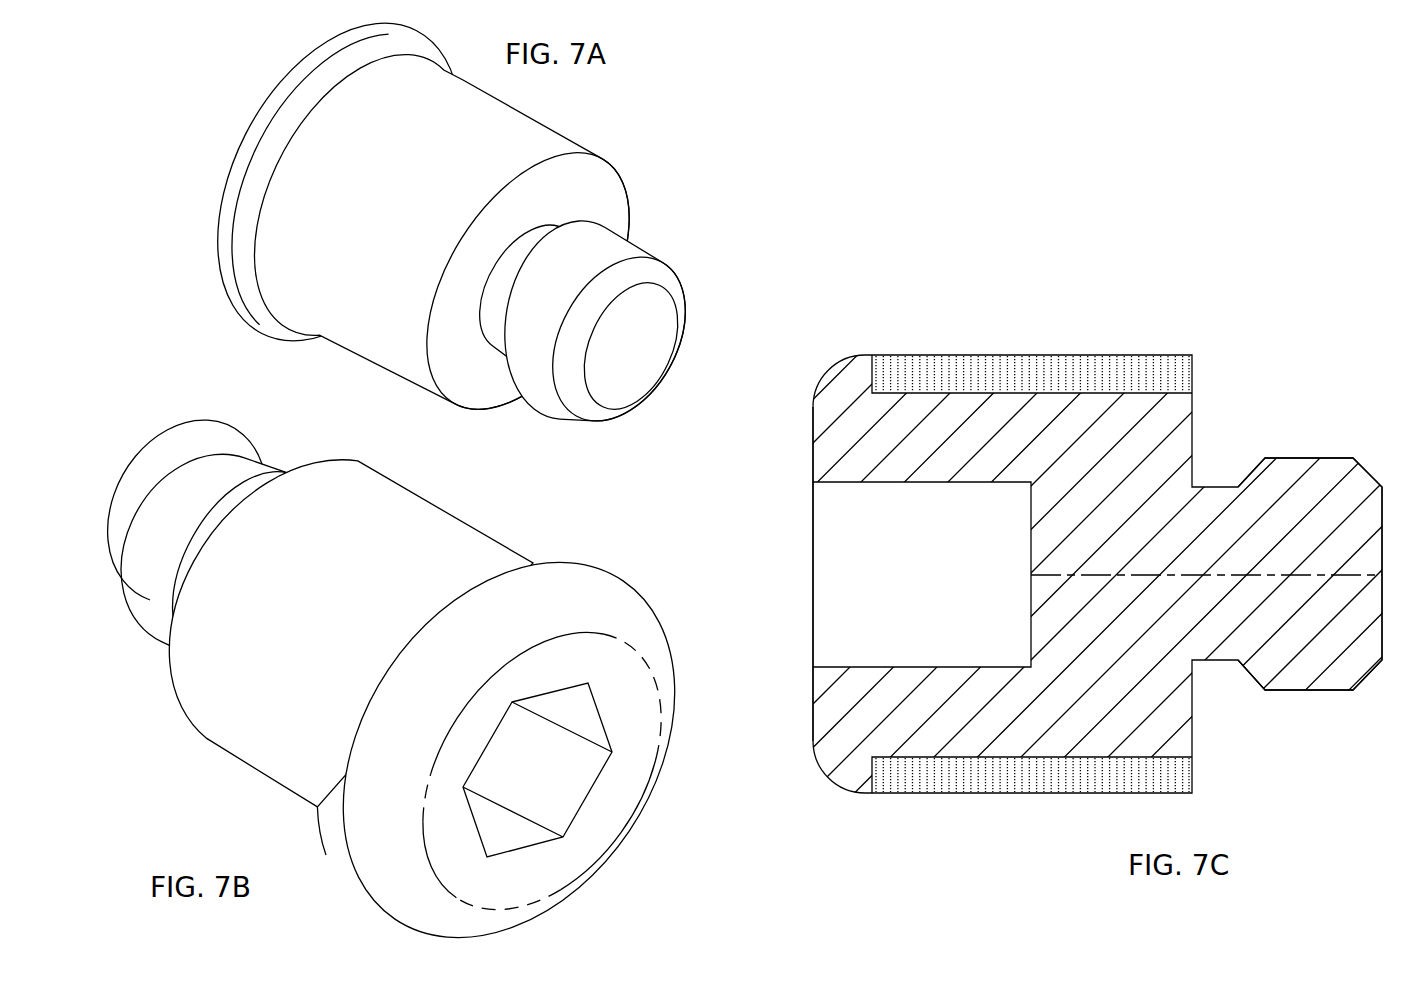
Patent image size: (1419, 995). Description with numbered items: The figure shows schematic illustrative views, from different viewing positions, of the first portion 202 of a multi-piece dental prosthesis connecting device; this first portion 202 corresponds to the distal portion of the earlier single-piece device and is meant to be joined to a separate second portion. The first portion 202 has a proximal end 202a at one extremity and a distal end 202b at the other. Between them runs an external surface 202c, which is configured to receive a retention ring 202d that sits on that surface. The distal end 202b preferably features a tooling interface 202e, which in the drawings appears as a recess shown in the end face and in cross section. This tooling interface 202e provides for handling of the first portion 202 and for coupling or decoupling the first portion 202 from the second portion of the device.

In FIG. 7A, the first portion 202 is at (521, 222).
In FIG. 7B, the first portion 202 is at (442, 672).
In FIG. 7C, the first portion 202 is at (897, 519).
In FIG. 7A, the proximal end 202a is at (738, 219).
In FIG. 7B, the proximal end 202a is at (158, 497).
In FIG. 7C, the proximal end 202a is at (1300, 458).
In FIG. 7A, the distal end 202b is at (212, 212).
In FIG. 7B, the distal end 202b is at (617, 822).
In FIG. 7C, the distal end 202b is at (813, 700).
In FIG. 7A, the external surface 202c is at (560, 140).
In FIG. 7B, the external surface 202c is at (422, 488).
In FIG. 7C, the external surface 202c is at (1145, 756).
In FIG. 7C, the retention ring 202d is at (1002, 356).
In FIG. 7B, the tooling interface 202e is at (558, 793).
In FIG. 7C, the tooling interface 202e is at (857, 596).